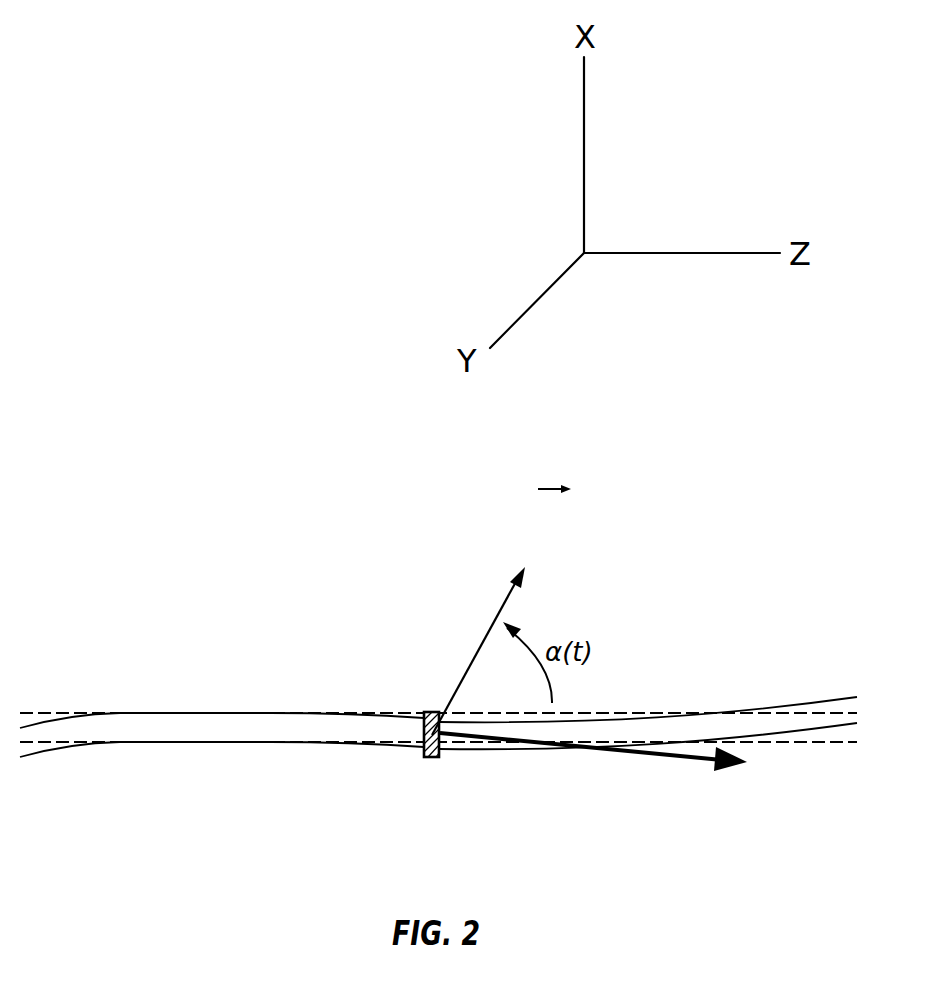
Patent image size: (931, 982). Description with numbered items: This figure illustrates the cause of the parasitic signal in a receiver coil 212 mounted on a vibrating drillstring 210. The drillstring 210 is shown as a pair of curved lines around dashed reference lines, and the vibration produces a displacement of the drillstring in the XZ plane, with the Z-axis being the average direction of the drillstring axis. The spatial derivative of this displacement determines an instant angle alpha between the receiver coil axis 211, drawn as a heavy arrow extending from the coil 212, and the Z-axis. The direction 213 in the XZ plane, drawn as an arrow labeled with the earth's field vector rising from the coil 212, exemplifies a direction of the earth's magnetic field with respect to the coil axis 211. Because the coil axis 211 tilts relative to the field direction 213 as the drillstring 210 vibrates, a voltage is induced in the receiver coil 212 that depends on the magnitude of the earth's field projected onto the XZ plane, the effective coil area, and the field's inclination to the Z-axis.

The drillstring 210 is at (183, 712).
The receiver coil axis 211 is at (667, 760).
The receiver coil 212 is at (433, 759).
The direction of the earth's magnetic field 213 is at (482, 645).